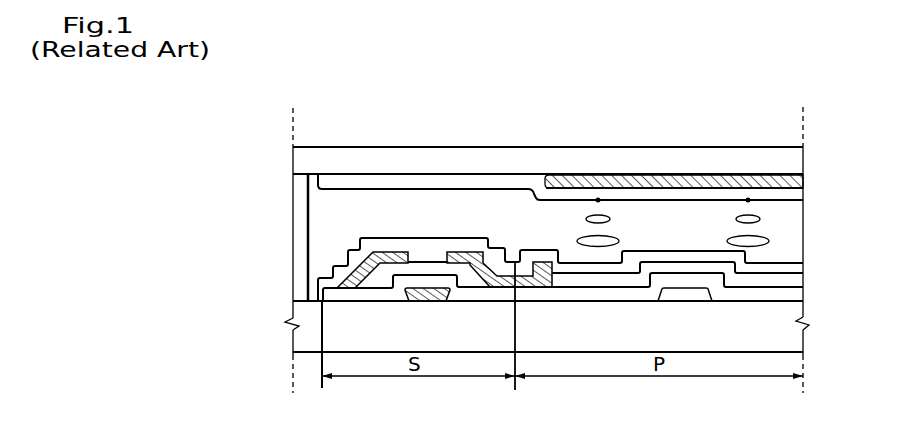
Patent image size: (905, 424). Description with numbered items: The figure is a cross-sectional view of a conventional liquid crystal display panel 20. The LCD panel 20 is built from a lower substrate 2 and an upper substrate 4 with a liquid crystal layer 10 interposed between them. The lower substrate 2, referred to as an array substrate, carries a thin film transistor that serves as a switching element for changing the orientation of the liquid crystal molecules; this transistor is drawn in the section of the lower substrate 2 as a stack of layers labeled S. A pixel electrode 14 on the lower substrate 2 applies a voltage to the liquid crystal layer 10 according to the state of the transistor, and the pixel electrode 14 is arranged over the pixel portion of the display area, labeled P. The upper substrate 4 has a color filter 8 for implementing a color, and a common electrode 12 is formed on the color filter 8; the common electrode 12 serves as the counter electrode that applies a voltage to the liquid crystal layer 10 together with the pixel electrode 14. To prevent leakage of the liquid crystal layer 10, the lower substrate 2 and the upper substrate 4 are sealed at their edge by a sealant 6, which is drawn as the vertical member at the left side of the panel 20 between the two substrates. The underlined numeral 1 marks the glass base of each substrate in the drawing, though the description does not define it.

The LCD panel 20 is at (396, 126).
The upper substrate 4 is at (810, 147).
The color filter 8 is at (609, 178).
The common electrode 12 is at (686, 197).
The liquid crystal layer 10 is at (810, 280).
The sealant 6 is at (300, 240).
The glass substrate 1 is at (559, 338).
The lower substrate 2 is at (810, 280).
The pixel electrode 14 is at (795, 280).